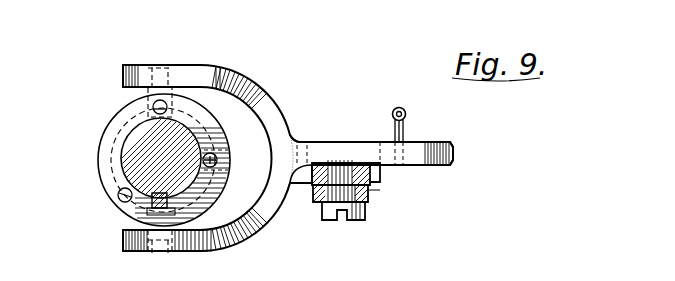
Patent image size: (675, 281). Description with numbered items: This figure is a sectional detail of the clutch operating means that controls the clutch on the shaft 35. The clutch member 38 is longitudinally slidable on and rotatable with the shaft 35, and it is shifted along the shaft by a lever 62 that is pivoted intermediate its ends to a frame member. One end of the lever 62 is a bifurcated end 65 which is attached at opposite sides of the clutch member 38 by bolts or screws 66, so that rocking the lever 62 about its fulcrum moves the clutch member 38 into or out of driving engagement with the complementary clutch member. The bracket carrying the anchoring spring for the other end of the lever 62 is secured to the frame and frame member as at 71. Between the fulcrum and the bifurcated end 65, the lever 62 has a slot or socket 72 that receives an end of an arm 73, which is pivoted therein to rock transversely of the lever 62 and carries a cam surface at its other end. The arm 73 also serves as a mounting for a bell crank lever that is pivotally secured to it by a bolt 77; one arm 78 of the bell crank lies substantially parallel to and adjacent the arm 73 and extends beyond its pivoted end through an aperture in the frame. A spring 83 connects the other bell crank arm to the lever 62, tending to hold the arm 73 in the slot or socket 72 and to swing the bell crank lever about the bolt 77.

The shaft 35 is at (130, 130).
The clutch member 38 is at (108, 192).
The lever 62 is at (427, 139).
The bifurcated end 65 is at (268, 92).
The bolts 66 is at (160, 67).
The securing point 71 is at (303, 163).
The slot or socket 72 is at (382, 170).
The arm 73 is at (370, 185).
The bolt 77 is at (362, 220).
The arm 78 is at (368, 197).
The spring 83 is at (395, 110).